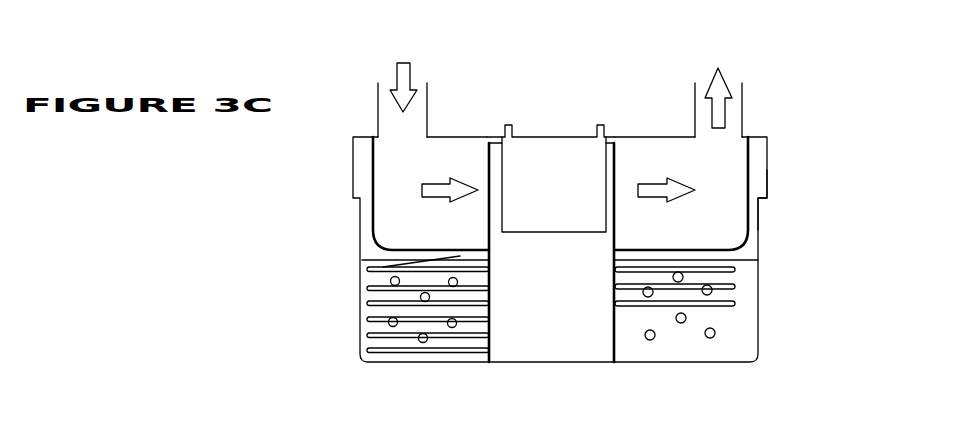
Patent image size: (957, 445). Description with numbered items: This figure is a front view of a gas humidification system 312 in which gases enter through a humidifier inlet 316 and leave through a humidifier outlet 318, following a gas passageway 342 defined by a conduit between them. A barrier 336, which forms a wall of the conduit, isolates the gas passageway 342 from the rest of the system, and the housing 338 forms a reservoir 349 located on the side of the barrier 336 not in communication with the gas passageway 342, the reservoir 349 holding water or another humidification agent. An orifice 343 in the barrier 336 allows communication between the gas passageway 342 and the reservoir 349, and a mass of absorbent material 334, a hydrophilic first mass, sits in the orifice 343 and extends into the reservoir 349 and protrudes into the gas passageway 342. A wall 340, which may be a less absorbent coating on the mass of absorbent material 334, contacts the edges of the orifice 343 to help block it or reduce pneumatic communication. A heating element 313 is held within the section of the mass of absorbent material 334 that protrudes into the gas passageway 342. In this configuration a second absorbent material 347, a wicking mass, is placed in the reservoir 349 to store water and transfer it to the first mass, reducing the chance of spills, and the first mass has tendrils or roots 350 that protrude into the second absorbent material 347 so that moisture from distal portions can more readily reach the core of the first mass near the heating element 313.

The gas humidification system 312 is at (808, 293).
The heating element 313 is at (568, 147).
The humidifier inlet 316 is at (427, 95).
The humidifier outlet 318 is at (695, 100).
The mass of absorbent material 334 is at (592, 342).
The barrier 336 is at (735, 250).
The housing 338 is at (762, 228).
The wall 340 is at (487, 140).
The gas passageway 342 is at (512, 120).
The orifice 343 is at (372, 271).
The second absorbent material 347 is at (725, 323).
The reservoir 349 is at (740, 255).
The tendrils or roots 350 is at (400, 351).